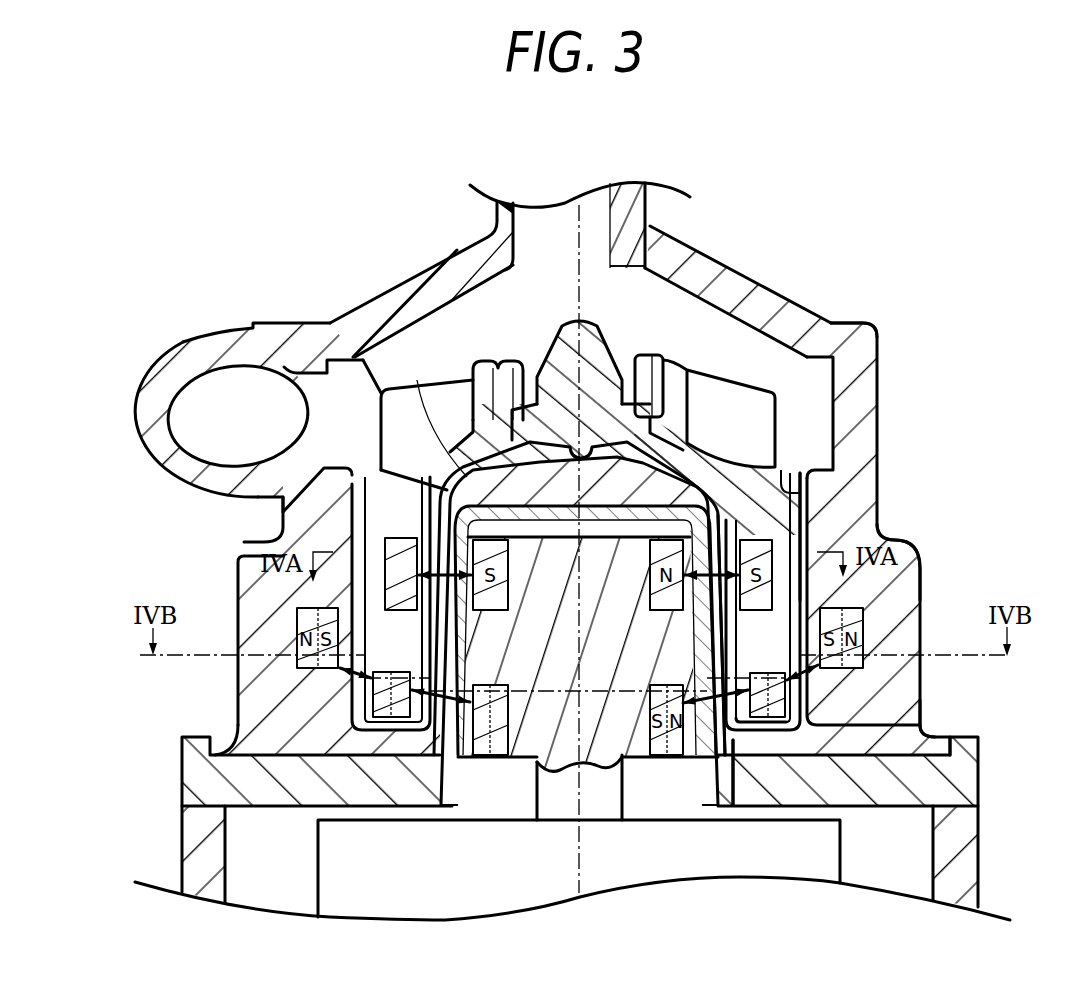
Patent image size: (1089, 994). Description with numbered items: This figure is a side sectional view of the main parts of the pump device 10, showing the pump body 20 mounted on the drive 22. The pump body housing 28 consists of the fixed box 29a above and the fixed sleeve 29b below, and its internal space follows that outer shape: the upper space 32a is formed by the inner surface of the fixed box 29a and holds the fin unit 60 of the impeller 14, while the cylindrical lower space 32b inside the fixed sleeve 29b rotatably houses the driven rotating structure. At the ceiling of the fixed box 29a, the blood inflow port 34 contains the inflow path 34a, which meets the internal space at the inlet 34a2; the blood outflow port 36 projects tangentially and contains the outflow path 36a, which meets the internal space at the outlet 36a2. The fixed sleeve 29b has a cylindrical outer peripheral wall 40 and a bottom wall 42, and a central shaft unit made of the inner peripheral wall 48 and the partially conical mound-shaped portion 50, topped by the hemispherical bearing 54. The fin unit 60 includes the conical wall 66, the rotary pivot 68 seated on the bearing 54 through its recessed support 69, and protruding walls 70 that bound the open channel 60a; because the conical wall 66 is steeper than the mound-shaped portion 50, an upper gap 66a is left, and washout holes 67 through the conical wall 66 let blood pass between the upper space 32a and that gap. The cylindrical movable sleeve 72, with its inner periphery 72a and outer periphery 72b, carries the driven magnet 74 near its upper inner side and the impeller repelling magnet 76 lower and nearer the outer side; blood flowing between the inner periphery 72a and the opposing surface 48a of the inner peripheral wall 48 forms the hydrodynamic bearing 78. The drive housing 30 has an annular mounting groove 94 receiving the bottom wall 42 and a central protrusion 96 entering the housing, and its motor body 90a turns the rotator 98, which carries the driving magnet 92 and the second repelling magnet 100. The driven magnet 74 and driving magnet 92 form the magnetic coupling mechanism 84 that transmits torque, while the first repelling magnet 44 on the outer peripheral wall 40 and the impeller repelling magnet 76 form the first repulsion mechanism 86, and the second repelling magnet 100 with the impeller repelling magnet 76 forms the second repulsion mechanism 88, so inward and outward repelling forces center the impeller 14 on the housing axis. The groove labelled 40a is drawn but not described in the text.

The pump device 10 is at (247, 222).
The impeller 14 is at (481, 356).
The pump body 20 is at (908, 313).
The drive 22 is at (987, 837).
The pump body housing 28 is at (866, 414).
The fixed box 29a is at (792, 300).
The fixed sleeve 29b is at (921, 578).
The drive housing 30 is at (978, 752).
The upper space 32a is at (740, 265).
The lower space 32b is at (797, 720).
The blood inflow port 34 is at (663, 212).
The inflow path 34a is at (527, 222).
The inlet 34a2 is at (640, 267).
The blood outflow port 36 is at (183, 343).
The outflow path 36a is at (187, 417).
The outlet 36a2 is at (303, 372).
The outer peripheral wall 40 is at (855, 462).
The groove 40a is at (781, 472).
The bottom wall 42 is at (780, 743).
The first repelling magnet 44 is at (287, 612).
The inner peripheral wall 48 is at (723, 733).
The opposing surface 48a is at (748, 673).
The mound-shaped portion 50 is at (662, 495).
The bearing 54 is at (572, 447).
The fin unit 60 is at (377, 387).
The channel 60a is at (400, 413).
The conical wall 66 is at (417, 463).
The upper gap 66a is at (443, 443).
The washout holes 67 is at (637, 420).
The rotary pivot 68 is at (568, 323).
The recessed support 69 is at (586, 458).
The protruding walls 70 is at (737, 382).
The movable sleeve 72 is at (312, 477).
The inner periphery 72a is at (722, 628).
The outer periphery 72b is at (808, 515).
The driven magnet 74 is at (362, 520).
The impeller repelling magnet 76 is at (386, 718).
The hydrodynamic bearing 78 is at (733, 805).
The magnetic coupling mechanism 84 is at (408, 524).
The first repulsion mechanism 86 is at (357, 675).
The second repulsion mechanism 88 is at (433, 732).
The motor body 90a is at (507, 900).
The driving magnet 92 is at (508, 596).
The mounting groove 94 is at (225, 735).
The central protrusion 96 is at (607, 513).
The rotator 98 is at (555, 797).
The second repelling magnet 100 is at (482, 755).